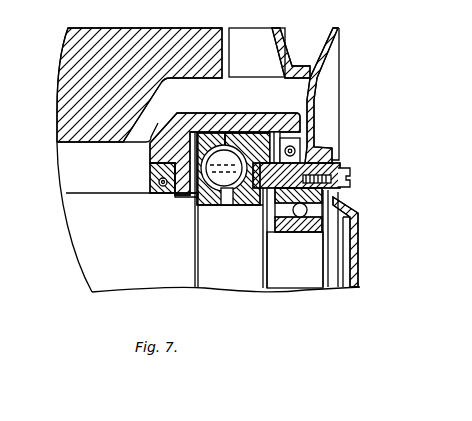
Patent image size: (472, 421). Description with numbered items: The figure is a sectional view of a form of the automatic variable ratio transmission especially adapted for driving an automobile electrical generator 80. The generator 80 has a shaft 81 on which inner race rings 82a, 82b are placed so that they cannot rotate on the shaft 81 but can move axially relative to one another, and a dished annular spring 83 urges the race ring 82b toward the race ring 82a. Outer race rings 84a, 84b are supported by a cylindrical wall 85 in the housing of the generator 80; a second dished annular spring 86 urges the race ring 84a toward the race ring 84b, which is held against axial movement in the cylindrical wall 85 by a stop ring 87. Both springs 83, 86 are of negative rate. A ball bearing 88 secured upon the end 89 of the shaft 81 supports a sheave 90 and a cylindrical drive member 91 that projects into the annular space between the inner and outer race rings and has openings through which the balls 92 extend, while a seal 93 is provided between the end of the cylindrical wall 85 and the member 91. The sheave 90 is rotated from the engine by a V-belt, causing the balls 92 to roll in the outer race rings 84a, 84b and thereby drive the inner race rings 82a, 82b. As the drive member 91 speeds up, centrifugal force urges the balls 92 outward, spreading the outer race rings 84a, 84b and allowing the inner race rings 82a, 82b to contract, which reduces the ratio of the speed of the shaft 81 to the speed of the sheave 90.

The generator 80 is at (200, 38).
The shaft 81 is at (128, 255).
The inner race ring 82a is at (197, 212).
The inner race ring 82b is at (252, 210).
The dished annular spring 83 is at (270, 222).
The outer race ring 84a is at (204, 135).
The outer race ring 84b is at (262, 118).
The cylindrical wall 85 is at (238, 113).
The dished annular spring 86 is at (150, 156).
The stop ring 87 is at (278, 133).
The ball bearing 88 is at (340, 198).
The end of the shaft 89 is at (307, 241).
The sheave 90 is at (332, 68).
The cylindrical drive member 91 is at (337, 165).
The balls 92 is at (193, 196).
The seal 93 is at (303, 158).